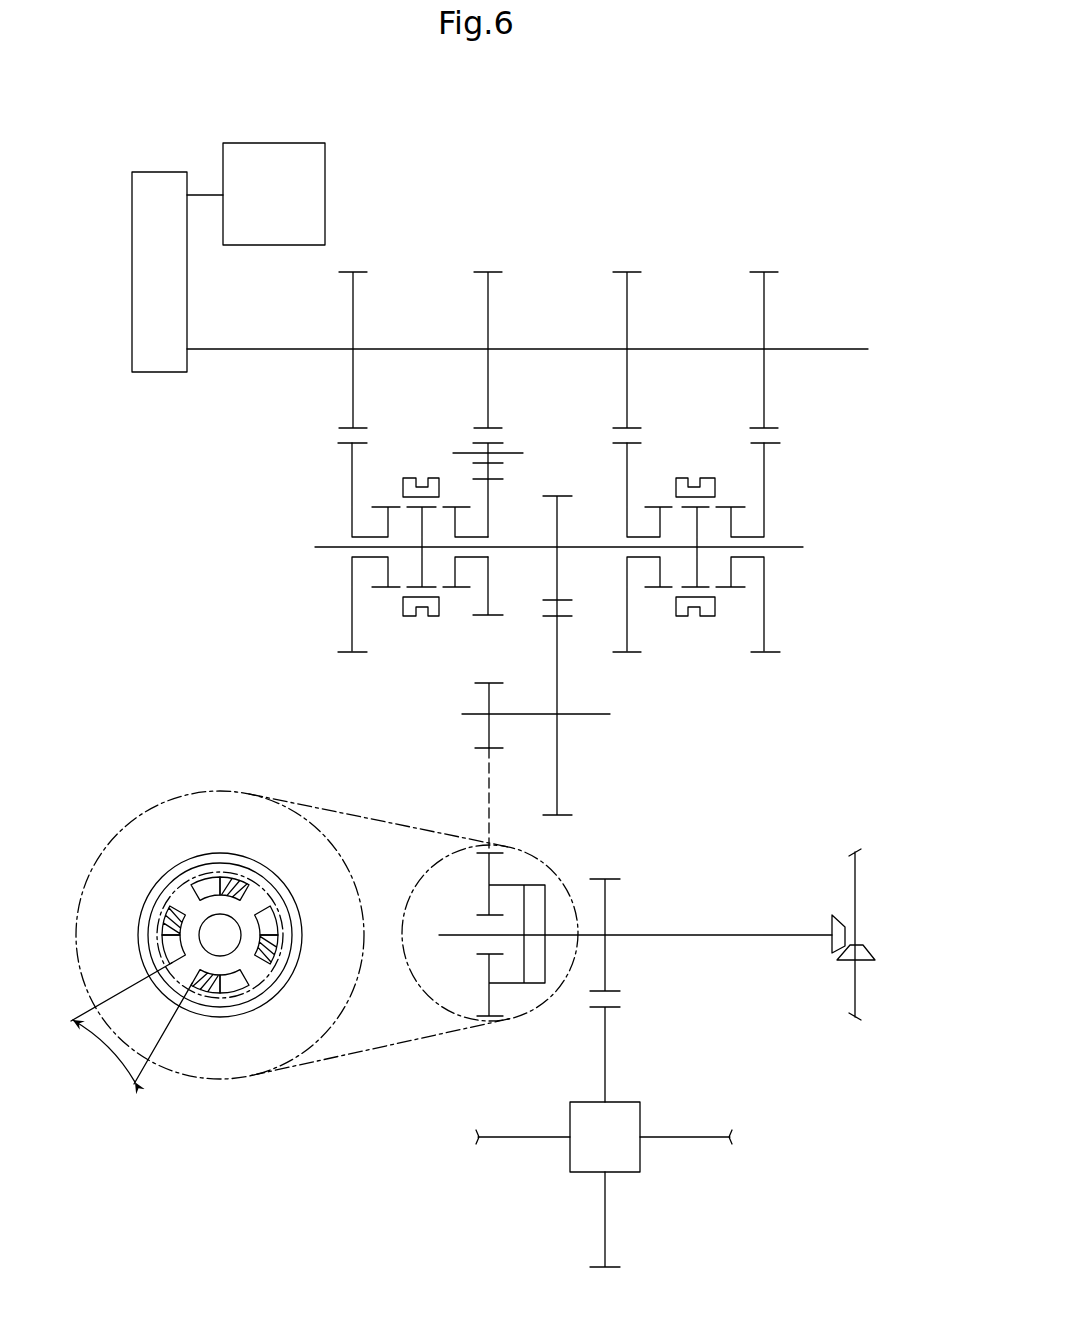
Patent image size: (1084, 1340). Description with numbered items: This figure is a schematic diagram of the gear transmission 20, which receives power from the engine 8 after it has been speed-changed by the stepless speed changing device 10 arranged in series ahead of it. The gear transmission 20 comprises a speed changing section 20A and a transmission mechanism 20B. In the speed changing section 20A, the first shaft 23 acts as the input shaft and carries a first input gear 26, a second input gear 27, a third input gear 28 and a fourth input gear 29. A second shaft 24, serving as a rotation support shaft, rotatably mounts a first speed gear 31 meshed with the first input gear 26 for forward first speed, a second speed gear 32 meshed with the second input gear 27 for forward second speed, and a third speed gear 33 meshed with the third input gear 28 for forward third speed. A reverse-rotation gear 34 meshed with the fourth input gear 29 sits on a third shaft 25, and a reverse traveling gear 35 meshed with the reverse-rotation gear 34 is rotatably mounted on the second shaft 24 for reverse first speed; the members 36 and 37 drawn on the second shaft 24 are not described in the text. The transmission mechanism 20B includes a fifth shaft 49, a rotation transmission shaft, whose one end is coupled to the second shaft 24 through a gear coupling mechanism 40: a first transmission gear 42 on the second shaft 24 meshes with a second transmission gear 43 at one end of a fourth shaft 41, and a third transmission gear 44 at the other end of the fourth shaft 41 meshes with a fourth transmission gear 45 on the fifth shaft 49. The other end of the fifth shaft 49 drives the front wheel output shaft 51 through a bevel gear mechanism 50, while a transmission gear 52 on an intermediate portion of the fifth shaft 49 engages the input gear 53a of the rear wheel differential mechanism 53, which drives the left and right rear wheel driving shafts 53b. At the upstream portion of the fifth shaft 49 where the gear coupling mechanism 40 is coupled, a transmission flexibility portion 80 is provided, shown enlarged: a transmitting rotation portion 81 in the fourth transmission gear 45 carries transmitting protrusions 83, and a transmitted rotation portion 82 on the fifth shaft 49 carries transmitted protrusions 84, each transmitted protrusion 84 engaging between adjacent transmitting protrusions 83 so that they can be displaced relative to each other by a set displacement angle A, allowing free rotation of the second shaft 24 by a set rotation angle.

The engine 8 is at (282, 143).
The stepless speed changing device 10 is at (128, 212).
The gear transmission 20 is at (216, 474).
The speed changing section 20A is at (864, 271).
The transmission mechanism 20B is at (774, 746).
The first shaft 23 is at (265, 348).
The second shaft 24 is at (330, 547).
The third shaft 25 is at (512, 452).
The first input gear 26 is at (629, 290).
The second input gear 27 is at (355, 290).
The third input gear 28 is at (766, 290).
The fourth input gear 29 is at (490, 290).
The first speed gear 31 is at (630, 620).
The second speed gear 32 is at (352, 603).
The third speed gear 33 is at (766, 612).
The reverse-rotation gear 34 is at (483, 443).
The reverse traveling gear 35 is at (493, 588).
The dog clutch sleeve 36 is at (690, 478).
The dog clutch sleeve 37 is at (411, 478).
The gear coupling mechanism 40 is at (423, 770).
The fourth shaft 41 is at (592, 715).
The first transmission gear 42 is at (560, 565).
The second transmission gear 43 is at (556, 655).
The third transmission gear 44 is at (488, 733).
The fourth transmission gear 45 is at (487, 870).
The fifth shaft 49 is at (720, 934).
The bevel gear mechanism 50 is at (829, 893).
The front wheel output shaft 51 is at (858, 887).
The transmission gear 52 is at (607, 905).
The rear wheel differential mechanism 53 is at (667, 1198).
The input gear 53a is at (606, 1040).
The rear wheel driving shafts 53b is at (525, 1136).
The transmission flexibility portion 80 is at (546, 900).
The transmitting rotation portion 81 is at (293, 892).
The transmitted rotation portion 82 is at (152, 907).
The transmitting protrusions 83 is at (210, 882).
The transmitted protrusions 84 is at (240, 881).
The set displacement angle A is at (132, 1024).